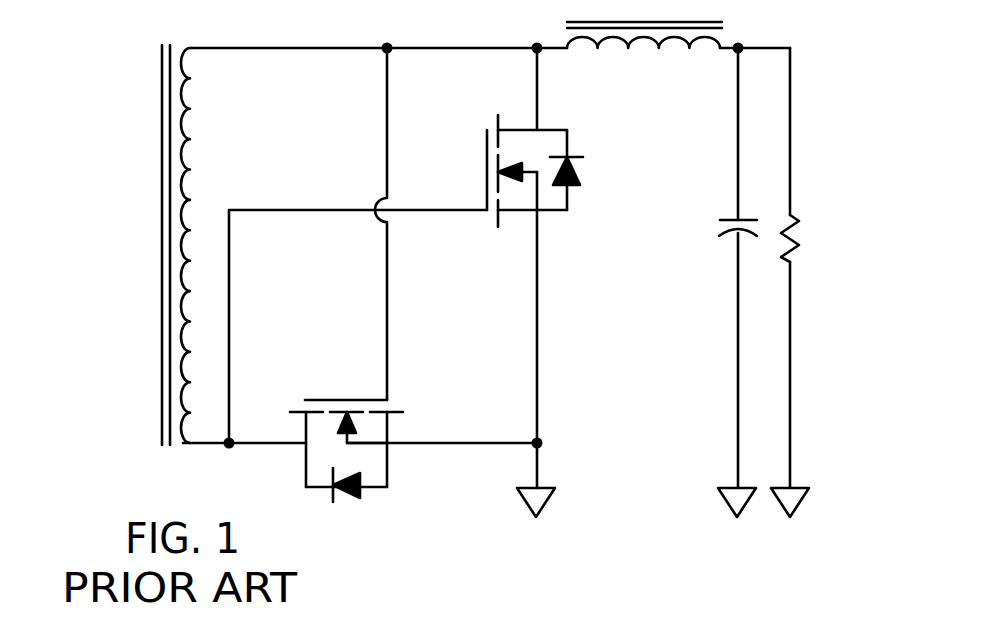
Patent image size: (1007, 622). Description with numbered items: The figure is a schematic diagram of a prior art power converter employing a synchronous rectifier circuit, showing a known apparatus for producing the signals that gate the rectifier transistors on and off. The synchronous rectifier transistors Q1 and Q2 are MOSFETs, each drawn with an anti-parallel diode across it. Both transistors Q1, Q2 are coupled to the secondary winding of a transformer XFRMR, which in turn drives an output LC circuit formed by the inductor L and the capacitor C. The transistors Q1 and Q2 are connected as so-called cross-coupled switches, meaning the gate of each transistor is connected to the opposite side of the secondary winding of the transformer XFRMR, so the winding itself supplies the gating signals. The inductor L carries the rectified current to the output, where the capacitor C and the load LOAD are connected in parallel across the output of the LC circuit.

The transformer XFRMR is at (139, 245).
The synchronous rectifier transistor Q1 is at (512, 110).
The synchronous rectifier transistor Q2 is at (414, 424).
The inductor L is at (644, 63).
The capacitor C is at (716, 268).
The load LOAD is at (844, 268).